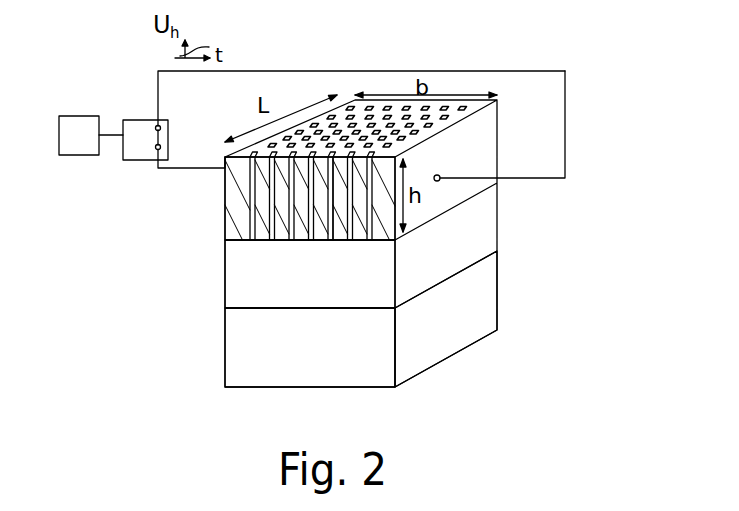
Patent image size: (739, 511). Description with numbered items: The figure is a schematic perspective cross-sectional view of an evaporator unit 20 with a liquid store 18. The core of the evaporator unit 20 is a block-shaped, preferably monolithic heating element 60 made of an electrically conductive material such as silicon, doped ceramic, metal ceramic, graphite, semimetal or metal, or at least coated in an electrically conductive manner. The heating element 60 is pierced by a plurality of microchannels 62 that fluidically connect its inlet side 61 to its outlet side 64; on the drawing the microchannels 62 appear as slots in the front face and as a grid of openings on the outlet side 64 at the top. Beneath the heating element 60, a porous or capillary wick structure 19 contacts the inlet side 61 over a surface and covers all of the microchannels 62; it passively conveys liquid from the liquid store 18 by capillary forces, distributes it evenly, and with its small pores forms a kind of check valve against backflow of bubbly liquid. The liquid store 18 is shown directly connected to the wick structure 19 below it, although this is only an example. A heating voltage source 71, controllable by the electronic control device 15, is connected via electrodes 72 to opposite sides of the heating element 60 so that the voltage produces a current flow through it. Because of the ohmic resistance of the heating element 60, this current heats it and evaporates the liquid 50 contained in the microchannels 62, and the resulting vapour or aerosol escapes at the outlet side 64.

The electronic control device 15 is at (92, 147).
The liquid store 18 is at (498, 287).
The wick structure 19 is at (208, 242).
The evaporator unit 20 is at (522, 220).
The liquid 50 is at (312, 367).
The heating element 60 is at (224, 178).
The inlet side 61 is at (342, 232).
The microchannels 62 is at (300, 206).
The outlet side 64 is at (302, 125).
The heating voltage source 71 is at (170, 137).
The electrodes 72 is at (440, 175).